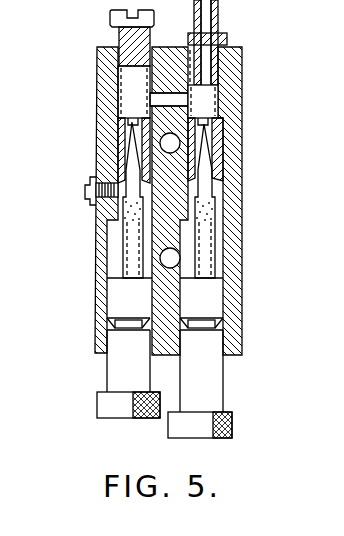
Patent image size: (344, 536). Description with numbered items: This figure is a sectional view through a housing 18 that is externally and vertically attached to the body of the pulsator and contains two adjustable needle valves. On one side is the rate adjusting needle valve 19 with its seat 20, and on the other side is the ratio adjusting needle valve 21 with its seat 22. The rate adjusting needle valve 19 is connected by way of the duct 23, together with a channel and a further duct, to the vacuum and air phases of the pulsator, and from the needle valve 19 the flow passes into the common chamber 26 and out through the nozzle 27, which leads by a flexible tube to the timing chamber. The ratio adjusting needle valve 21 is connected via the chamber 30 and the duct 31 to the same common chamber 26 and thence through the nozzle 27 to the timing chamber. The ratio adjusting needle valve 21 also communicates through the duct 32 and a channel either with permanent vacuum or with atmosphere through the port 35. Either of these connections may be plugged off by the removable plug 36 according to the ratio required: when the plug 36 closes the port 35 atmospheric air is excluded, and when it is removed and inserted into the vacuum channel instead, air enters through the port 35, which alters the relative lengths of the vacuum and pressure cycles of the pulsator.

The housing 18 is at (240, 182).
The rate adjusting needle valve 19 is at (210, 217).
The seat 20 is at (218, 152).
The ratio adjusting needle valve 21 is at (133, 236).
The seat 22 is at (122, 133).
The duct 23 is at (205, 201).
The common chamber 26 is at (212, 101).
The nozzle 27 is at (214, 20).
The chamber 30 is at (130, 83).
The duct 31 is at (158, 100).
The duct 32 is at (126, 209).
The port 35 is at (97, 161).
The removable plug 36 is at (86, 197).